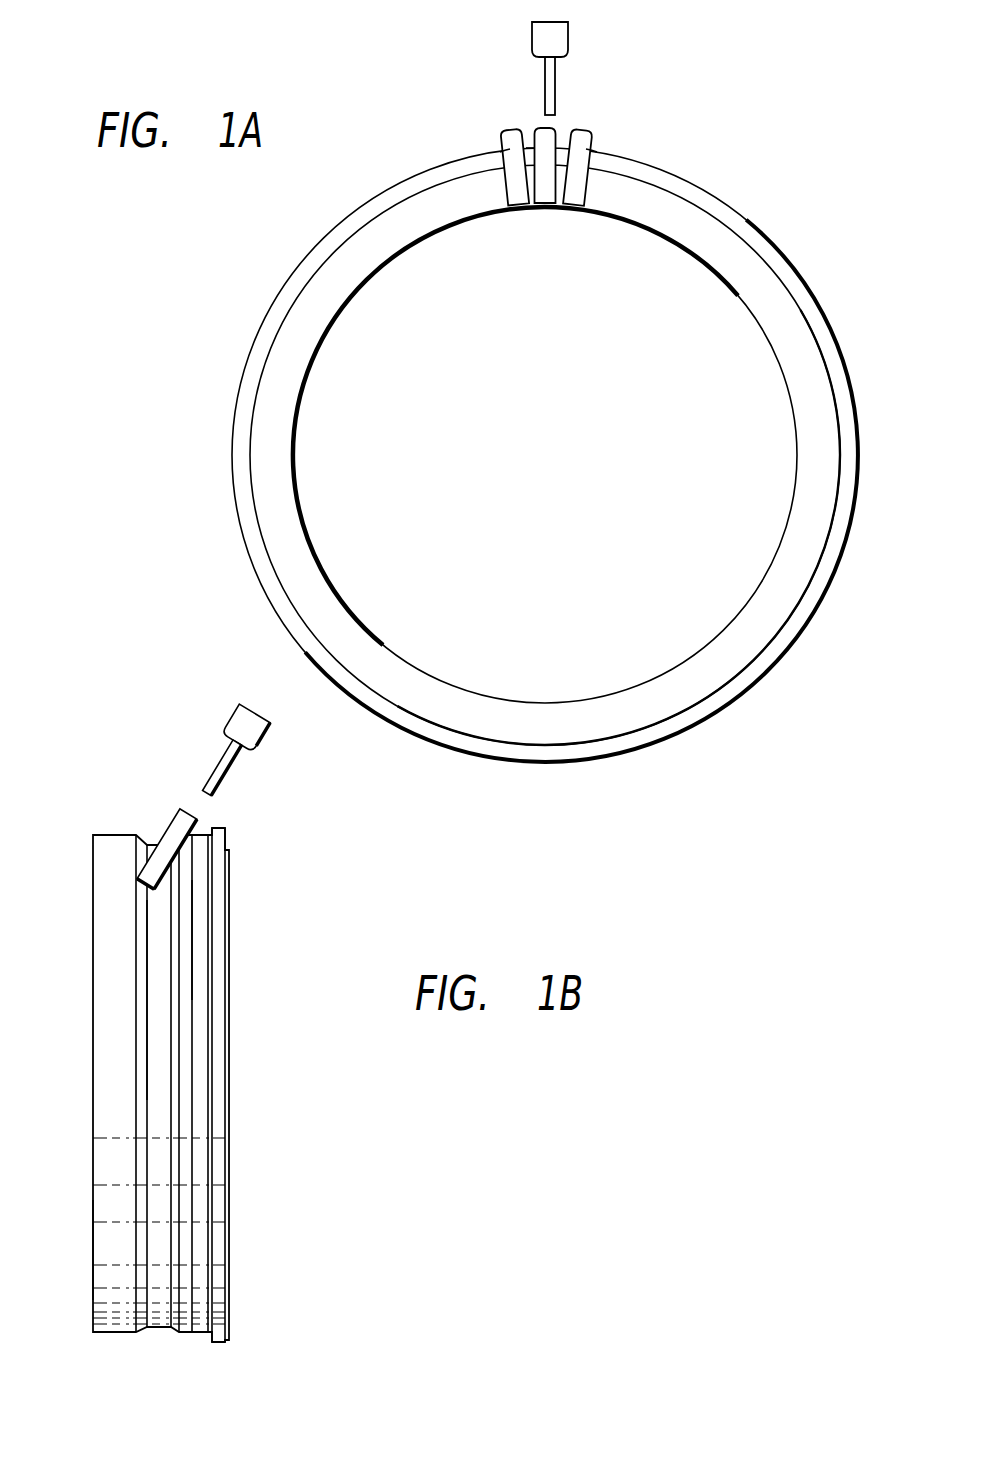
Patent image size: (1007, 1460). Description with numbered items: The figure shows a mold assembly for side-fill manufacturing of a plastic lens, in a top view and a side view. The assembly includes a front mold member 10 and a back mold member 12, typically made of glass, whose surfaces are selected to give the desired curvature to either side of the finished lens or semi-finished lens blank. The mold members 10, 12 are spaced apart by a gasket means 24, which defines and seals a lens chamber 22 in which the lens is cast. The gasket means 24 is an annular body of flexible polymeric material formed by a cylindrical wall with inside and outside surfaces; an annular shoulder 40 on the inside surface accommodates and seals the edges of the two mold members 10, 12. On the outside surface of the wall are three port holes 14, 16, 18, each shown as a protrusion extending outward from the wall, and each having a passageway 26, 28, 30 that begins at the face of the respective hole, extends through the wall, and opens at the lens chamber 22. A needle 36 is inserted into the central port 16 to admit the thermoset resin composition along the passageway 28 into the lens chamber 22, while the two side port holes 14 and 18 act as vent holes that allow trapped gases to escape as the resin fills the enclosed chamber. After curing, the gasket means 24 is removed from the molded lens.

In FIG. 1B, the front mold member 10 is at (113, 1013).
In FIG. 1B, the back mold member 12 is at (200, 902).
In FIG. 1A, the port hole 14 is at (503, 130).
In FIG. 1B, the port hole 14 is at (195, 820).
In FIG. 1A, the central port hole 16 is at (548, 127).
In FIG. 1B, the central port hole 16 is at (167, 847).
In FIG. 1A, the port hole 18 is at (592, 132).
In FIG. 1B, the port hole 18 is at (167, 847).
In FIG. 1B, the lens chamber 22 is at (138, 1092).
In FIG. 1A, the gasket means 24 is at (733, 185).
In FIG. 1B, the gasket means 24 is at (92, 1232).
In FIG. 1A, the passageway 26 is at (508, 142).
In FIG. 1A, the passageway 28 is at (543, 128).
In FIG. 1A, the passageway 30 is at (582, 147).
In FIG. 1A, the needle 36 is at (562, 38).
In FIG. 1B, the needle 36 is at (267, 738).
In FIG. 1A, the annular shoulder 40 is at (792, 569).